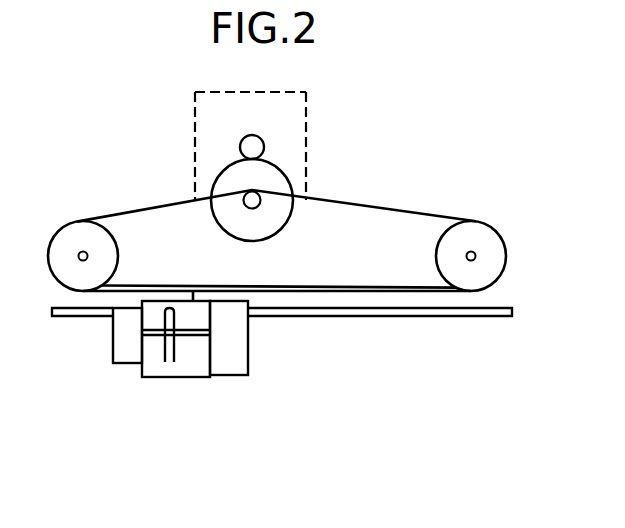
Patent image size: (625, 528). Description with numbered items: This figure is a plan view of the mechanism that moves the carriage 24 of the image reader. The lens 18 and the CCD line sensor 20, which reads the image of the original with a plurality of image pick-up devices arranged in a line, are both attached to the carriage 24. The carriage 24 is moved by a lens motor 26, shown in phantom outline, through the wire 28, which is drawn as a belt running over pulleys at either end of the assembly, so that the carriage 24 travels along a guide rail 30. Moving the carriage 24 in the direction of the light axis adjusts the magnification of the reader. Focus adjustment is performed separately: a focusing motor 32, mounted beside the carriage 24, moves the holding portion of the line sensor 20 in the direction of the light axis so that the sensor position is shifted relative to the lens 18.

The lens 18 is at (238, 365).
The CCD line sensor 20 is at (167, 362).
The carriage 24 is at (198, 377).
The lens motor 26 is at (195, 133).
The wire 28 is at (375, 208).
The guide rail 30 is at (483, 309).
The focusing motor 32 is at (125, 355).